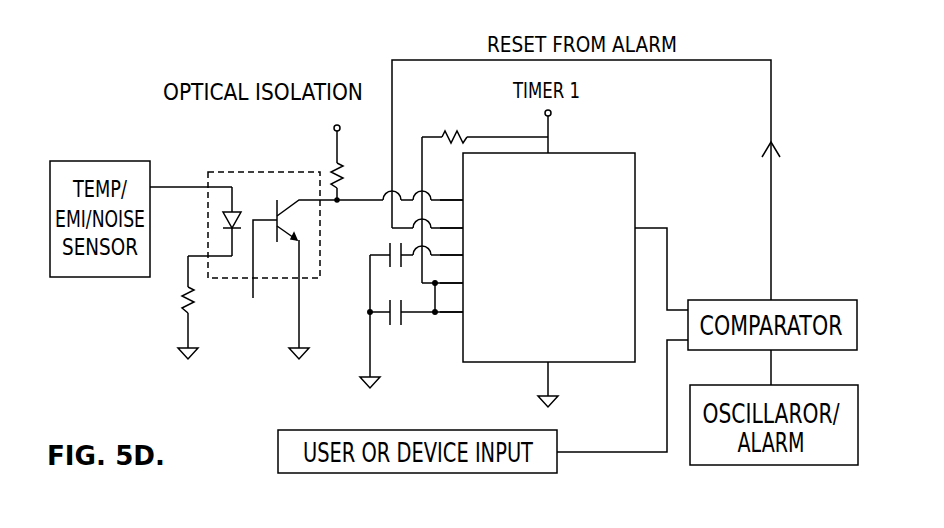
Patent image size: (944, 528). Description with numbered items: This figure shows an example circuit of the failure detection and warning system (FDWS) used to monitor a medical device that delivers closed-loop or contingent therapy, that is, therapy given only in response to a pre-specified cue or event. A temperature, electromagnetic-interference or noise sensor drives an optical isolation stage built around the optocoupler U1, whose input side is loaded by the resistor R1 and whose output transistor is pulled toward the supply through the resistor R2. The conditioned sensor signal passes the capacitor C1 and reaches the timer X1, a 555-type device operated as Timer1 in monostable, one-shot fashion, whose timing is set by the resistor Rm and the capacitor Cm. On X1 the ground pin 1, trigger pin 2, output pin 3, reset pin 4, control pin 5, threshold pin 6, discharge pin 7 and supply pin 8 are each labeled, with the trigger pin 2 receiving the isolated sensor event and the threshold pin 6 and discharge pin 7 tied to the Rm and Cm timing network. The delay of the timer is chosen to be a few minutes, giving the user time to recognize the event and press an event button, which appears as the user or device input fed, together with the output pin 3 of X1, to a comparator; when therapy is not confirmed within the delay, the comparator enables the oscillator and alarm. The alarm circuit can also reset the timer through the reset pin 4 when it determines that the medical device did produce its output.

The optical isolator A4N25 U1 is at (262, 253).
The resistor R1 is at (201, 307).
The resistor R2 is at (335, 157).
The capacitor C1 is at (402, 235).
The resistor Rm is at (485, 125).
The capacitor Cm is at (411, 321).
The 555D timer X1 is at (549, 259).
The timer pin 1 GND 1 is at (545, 384).
The timer pin 2 trigger 2 is at (451, 188).
The timer pin 3 output 3 is at (661, 256).
The timer pin 4 reset 4 is at (451, 216).
The timer pin 5 control 5 is at (451, 244).
The timer pin 6 threshold 6 is at (451, 272).
The timer pin 7 discharge 7 is at (451, 301).
The timer pin 8 Vcc 8 is at (536, 130).